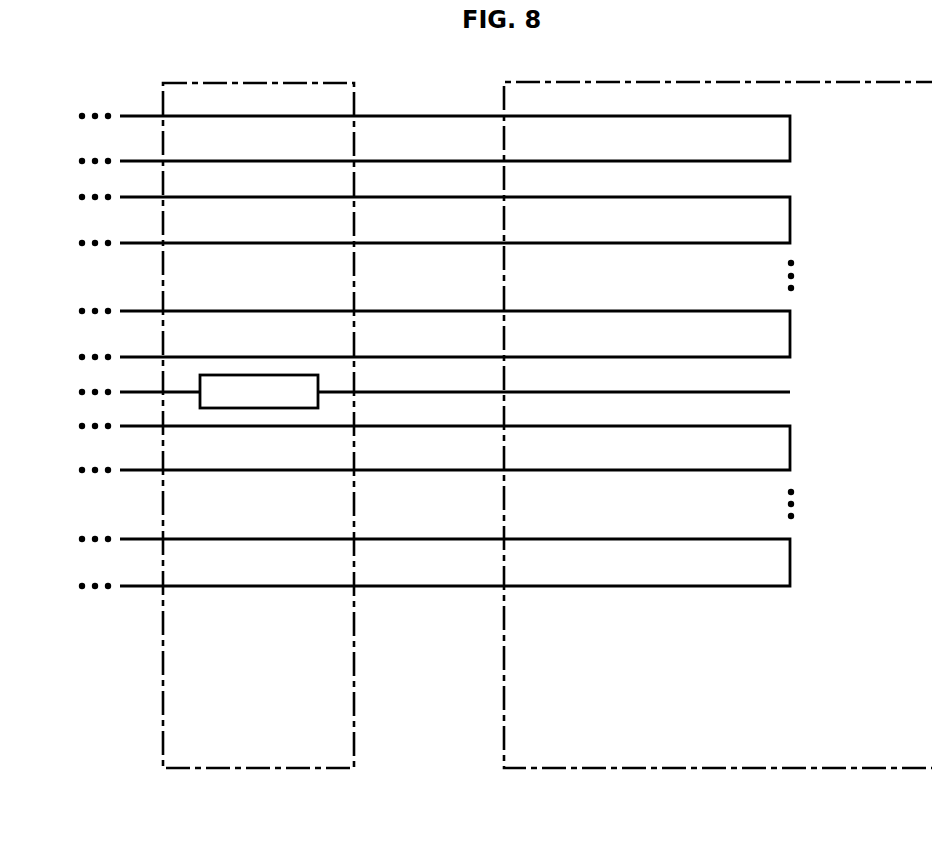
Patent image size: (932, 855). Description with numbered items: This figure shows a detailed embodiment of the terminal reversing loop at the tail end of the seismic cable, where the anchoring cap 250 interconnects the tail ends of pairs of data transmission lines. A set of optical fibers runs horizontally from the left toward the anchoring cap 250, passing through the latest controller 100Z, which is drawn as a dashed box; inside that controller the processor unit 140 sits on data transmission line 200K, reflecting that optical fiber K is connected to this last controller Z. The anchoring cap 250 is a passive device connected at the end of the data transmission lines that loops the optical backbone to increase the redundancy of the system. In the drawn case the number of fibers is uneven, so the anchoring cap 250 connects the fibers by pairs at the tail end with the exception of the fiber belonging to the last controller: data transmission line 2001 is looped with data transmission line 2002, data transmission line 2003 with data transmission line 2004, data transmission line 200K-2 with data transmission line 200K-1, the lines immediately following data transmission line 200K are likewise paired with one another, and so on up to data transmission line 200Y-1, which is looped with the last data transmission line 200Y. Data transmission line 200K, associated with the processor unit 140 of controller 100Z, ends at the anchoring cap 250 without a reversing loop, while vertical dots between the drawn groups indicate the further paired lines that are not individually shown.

The controller 100Z is at (257, 83).
The anchoring cap 250 is at (727, 82).
The processor unit 140 is at (259, 391).
The data transmission line 2001 is at (763, 116).
The data transmission line 2002 is at (763, 161).
The data transmission line 2003 is at (763, 197).
The data transmission line 2004 is at (763, 243).
The data transmission line 200K-2 is at (763, 311).
The data transmission line 200K-1 is at (763, 357).
The data transmission line 200K is at (763, 392).
The data transmission line 200Y-1 is at (763, 539).
The data transmission line 200Y is at (763, 586).